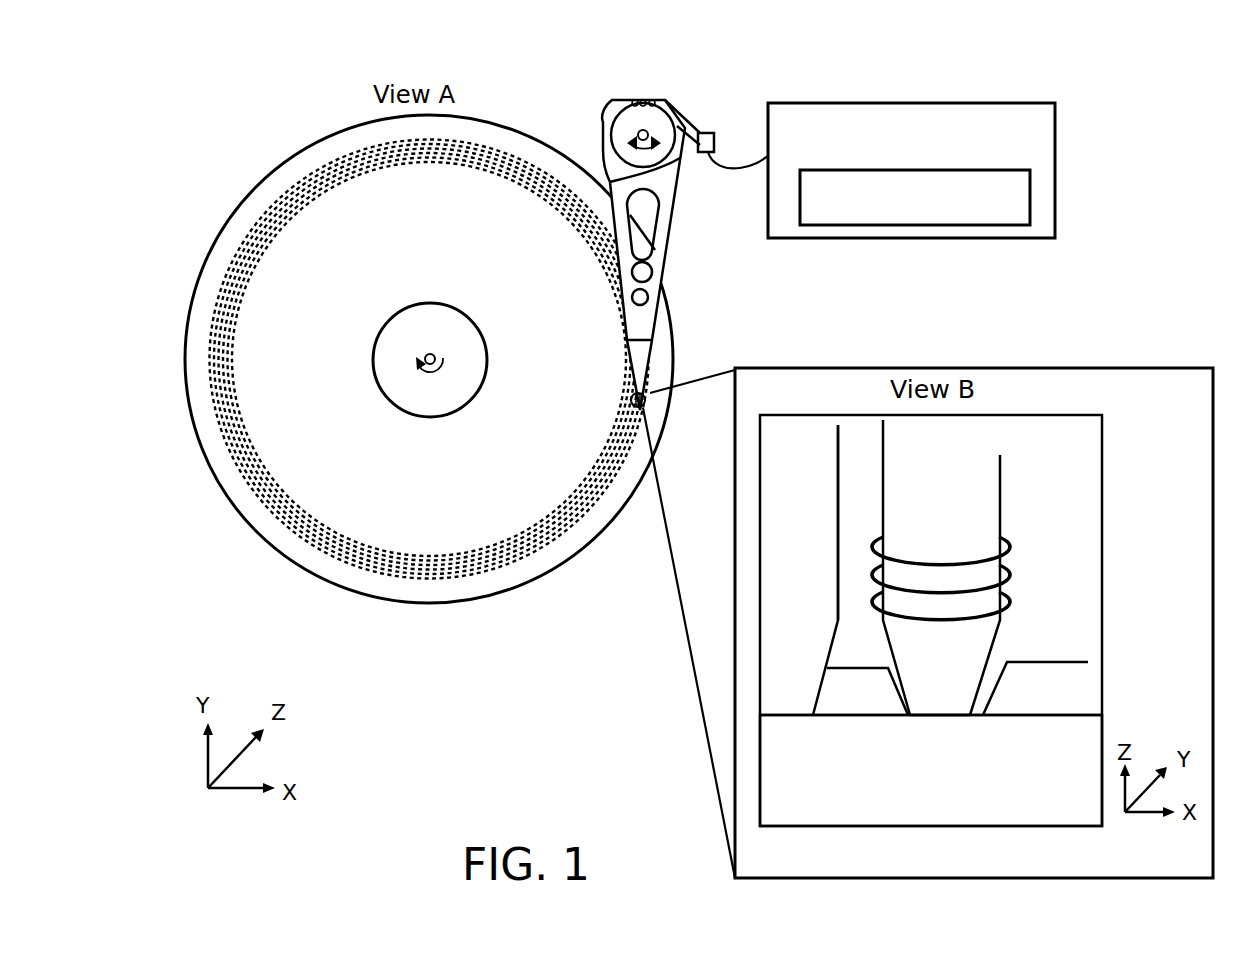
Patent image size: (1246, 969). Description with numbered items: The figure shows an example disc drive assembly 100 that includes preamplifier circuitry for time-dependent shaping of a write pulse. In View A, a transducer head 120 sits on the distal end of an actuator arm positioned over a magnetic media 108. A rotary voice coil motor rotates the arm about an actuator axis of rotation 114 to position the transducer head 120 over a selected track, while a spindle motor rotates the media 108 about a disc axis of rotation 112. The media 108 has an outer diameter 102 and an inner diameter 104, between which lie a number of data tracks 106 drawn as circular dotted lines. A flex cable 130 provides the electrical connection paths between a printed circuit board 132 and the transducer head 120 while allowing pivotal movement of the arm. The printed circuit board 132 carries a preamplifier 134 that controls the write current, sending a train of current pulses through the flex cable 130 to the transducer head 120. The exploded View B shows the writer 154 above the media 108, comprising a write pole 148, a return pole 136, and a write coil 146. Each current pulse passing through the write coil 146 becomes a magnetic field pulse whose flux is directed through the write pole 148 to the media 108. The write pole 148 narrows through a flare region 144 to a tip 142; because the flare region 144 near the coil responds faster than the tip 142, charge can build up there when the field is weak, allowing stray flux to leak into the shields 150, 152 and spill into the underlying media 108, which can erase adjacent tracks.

The disc drive assembly 100 is at (283, 89).
The outer diameter 102 is at (293, 157).
The inner diameter 104 is at (427, 303).
The data tracks 106 is at (273, 195).
The magnetic media 108 is at (320, 543).
The disc axis of rotation 112 is at (433, 363).
The actuator axis of rotation 114 is at (640, 133).
The transducer head 120 is at (645, 396).
The flex cable 130 is at (681, 137).
The printed circuit board 132 is at (958, 157).
The preamplifier 134 is at (1000, 208).
The return pole 136 is at (818, 561).
The tip of the write pole 142 is at (933, 717).
The flare region 144 is at (1010, 646).
The write coil 146 is at (988, 540).
The write pole 148 is at (962, 505).
The shield 150 is at (873, 705).
The shield 152 is at (1082, 705).
The writer 154 is at (862, 440).